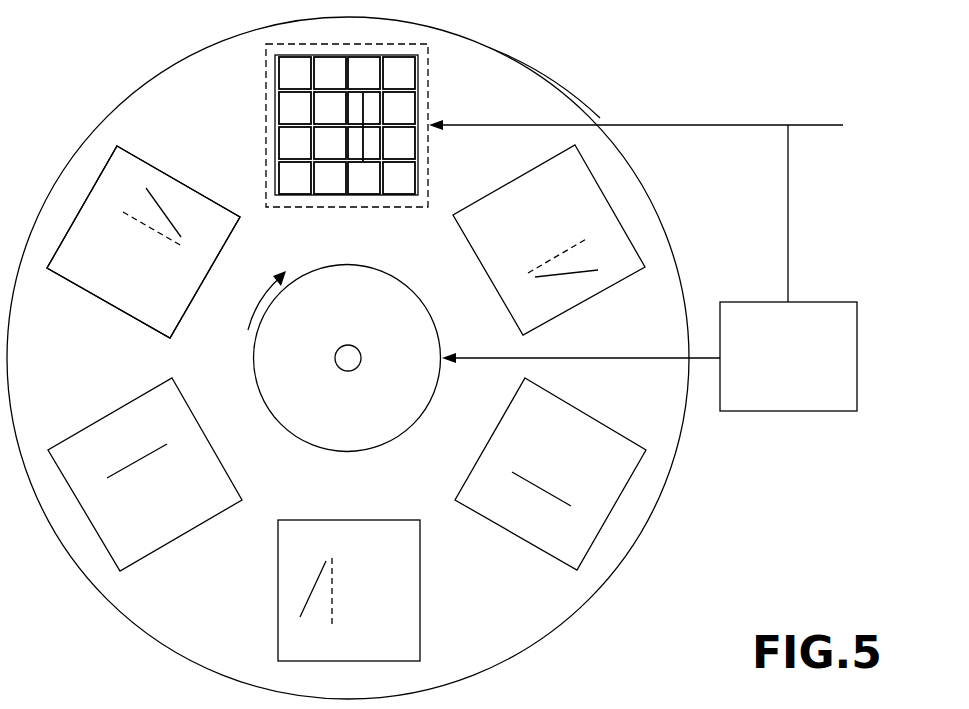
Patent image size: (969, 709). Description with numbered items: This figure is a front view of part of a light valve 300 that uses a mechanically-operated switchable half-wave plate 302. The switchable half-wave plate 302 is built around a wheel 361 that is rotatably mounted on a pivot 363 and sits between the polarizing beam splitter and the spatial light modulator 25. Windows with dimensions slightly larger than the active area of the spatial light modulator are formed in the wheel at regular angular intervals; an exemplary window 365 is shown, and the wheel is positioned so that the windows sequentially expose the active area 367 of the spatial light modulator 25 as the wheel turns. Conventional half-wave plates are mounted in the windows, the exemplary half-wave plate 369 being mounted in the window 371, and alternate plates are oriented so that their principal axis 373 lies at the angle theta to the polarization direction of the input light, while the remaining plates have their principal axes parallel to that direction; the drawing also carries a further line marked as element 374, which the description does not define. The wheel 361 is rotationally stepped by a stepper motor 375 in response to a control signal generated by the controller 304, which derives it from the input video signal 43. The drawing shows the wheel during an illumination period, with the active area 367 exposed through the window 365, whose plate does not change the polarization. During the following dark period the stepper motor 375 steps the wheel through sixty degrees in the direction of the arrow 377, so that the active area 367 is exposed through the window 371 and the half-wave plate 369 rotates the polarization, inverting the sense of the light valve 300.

The spatial light modulator 25 is at (428, 62).
The input video signal 43 is at (758, 125).
The light valve 300 is at (751, 491).
The switchable half-wave plate 302 is at (673, 233).
The controller 304 is at (790, 412).
The wheel 361 is at (542, 77).
The pivot 363 is at (360, 365).
The window 365 is at (276, 80).
The active area 367 is at (296, 107).
The half-wave plate 369 is at (107, 277).
The window 371 is at (224, 248).
The principal axis 373 is at (160, 203).
The alignment line 374 is at (127, 463).
The stepper motor 375 is at (385, 268).
The arrow 377 is at (257, 307).